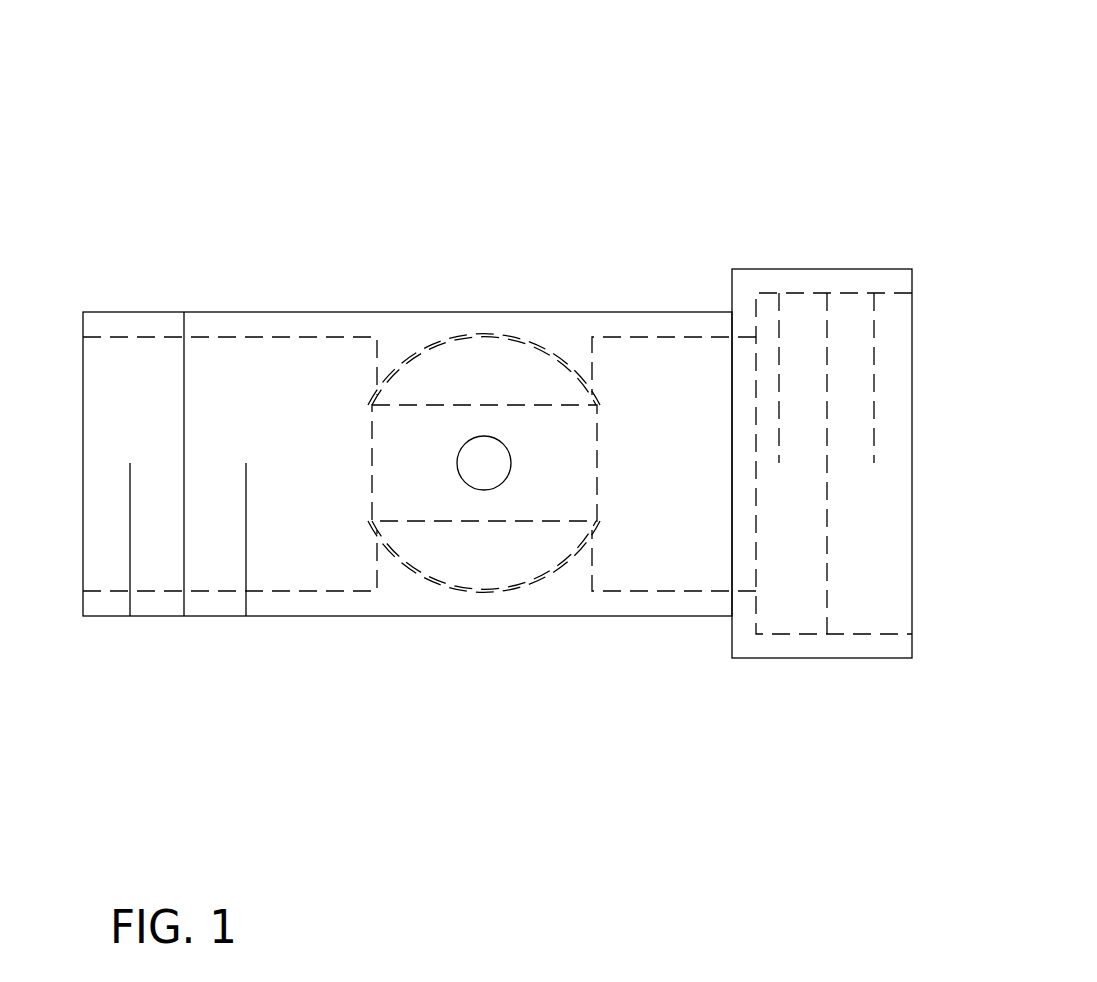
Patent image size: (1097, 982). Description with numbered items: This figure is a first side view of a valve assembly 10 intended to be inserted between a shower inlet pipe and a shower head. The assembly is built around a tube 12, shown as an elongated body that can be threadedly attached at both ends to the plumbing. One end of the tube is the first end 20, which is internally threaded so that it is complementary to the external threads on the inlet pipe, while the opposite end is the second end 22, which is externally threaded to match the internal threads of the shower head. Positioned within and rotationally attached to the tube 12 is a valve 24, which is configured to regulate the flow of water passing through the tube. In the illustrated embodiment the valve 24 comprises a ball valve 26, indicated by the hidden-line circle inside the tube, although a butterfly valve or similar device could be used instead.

The valve assembly 10 is at (502, 333).
The tube 12 is at (303, 293).
The first end 20 is at (920, 340).
The second end 22 is at (75, 355).
The valve 24 is at (530, 331).
The ball valve 26 is at (477, 333).